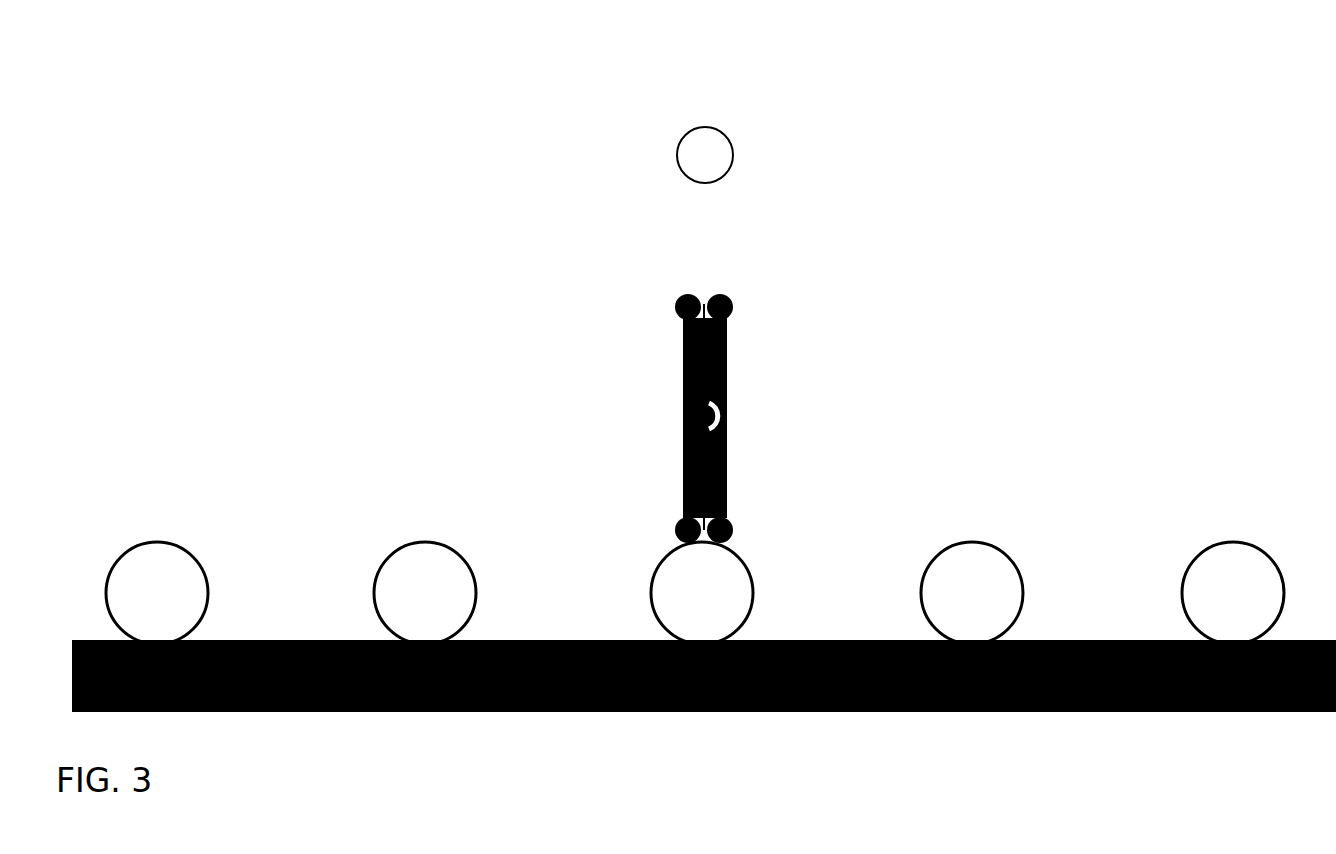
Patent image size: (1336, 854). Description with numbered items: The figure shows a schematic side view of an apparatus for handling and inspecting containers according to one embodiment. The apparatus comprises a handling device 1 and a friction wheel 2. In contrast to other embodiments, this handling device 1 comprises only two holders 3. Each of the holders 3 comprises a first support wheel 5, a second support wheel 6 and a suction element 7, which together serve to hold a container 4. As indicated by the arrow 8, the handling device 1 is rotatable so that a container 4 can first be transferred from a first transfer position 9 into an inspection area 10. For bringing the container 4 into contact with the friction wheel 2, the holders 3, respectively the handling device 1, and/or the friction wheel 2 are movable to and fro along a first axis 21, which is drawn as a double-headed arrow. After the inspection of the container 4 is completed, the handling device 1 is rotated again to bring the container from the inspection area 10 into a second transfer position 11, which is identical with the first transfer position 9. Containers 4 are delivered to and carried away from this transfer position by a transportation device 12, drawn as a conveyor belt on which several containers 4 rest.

The handling device 1 is at (572, 322).
The friction wheel 2 is at (698, 167).
The holder 3 is at (838, 195).
The container 4 is at (1240, 605).
The first support wheel 5 is at (683, 316).
The second support wheel 6 is at (732, 312).
The suction element 7 is at (705, 303).
The arrow 8 is at (724, 410).
The first transfer position 9 is at (422, 432).
The inspection area 10 is at (608, 163).
The second transfer position 11 is at (503, 460).
The transportation device 12 is at (336, 640).
The first axis 21 is at (349, 240).